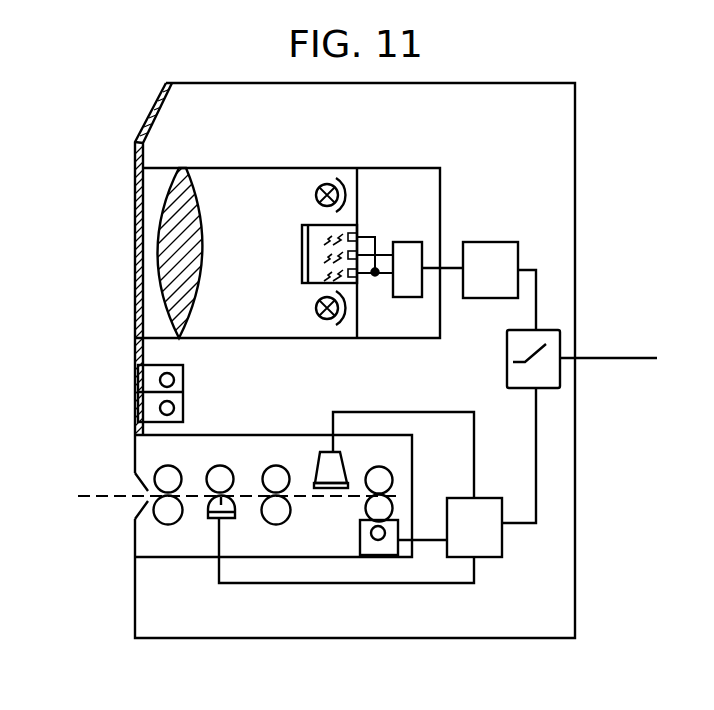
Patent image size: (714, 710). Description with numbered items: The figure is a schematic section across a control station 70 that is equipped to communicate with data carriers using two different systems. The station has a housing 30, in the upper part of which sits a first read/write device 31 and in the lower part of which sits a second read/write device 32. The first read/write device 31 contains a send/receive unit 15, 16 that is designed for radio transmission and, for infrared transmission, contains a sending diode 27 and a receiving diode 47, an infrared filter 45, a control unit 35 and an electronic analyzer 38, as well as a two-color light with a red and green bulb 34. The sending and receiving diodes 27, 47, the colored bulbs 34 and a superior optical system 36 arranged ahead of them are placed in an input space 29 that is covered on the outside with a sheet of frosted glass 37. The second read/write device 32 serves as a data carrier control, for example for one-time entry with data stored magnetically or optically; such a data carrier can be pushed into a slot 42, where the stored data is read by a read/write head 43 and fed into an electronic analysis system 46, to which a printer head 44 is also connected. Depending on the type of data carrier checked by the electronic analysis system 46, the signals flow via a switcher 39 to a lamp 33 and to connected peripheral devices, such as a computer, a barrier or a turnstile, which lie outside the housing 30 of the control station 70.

The send/receive unit 15 is at (441, 208).
The send/receive unit 16 is at (380, 229).
The sending diode 27 is at (362, 248).
The input space 29 is at (212, 192).
The housing 30 is at (560, 212).
The first read/write device 31 is at (130, 241).
The second read/write device 32 is at (152, 537).
The lamp 33 is at (310, 178).
The two-color light with red and green bulb 34 is at (328, 184).
The control unit 35 is at (415, 252).
The optical system 36 is at (158, 303).
The sheet of frosted glass 37 is at (137, 203).
The electronic analyzer 38 is at (510, 257).
The switcher 39 is at (555, 338).
The slot 42 is at (141, 486).
The read/write head 43 is at (217, 520).
The printer head 44 is at (325, 492).
The infrared filter 45 is at (302, 243).
The electronic analysis system 46 is at (492, 540).
The receiving diode 47 is at (370, 255).
The control station 70 is at (590, 461).